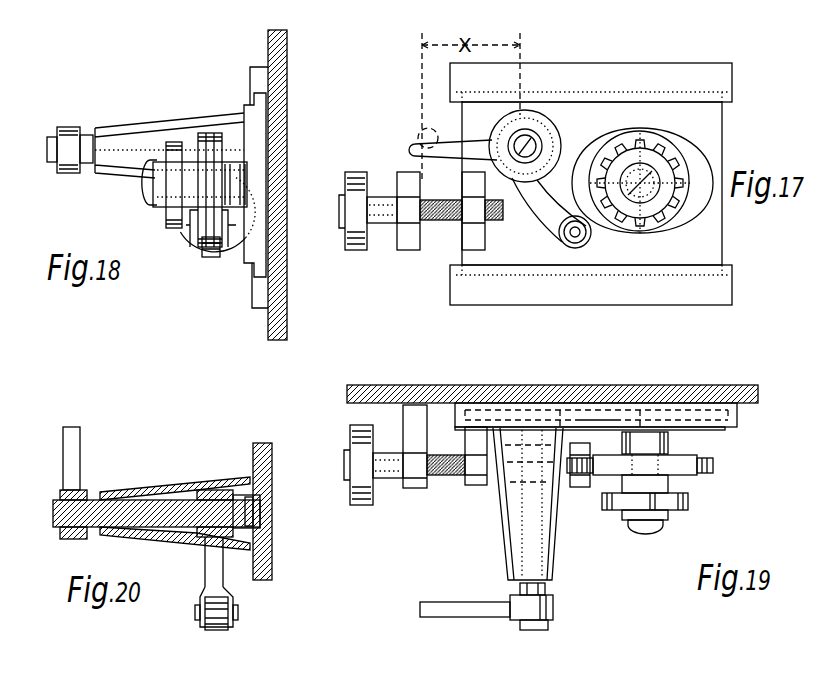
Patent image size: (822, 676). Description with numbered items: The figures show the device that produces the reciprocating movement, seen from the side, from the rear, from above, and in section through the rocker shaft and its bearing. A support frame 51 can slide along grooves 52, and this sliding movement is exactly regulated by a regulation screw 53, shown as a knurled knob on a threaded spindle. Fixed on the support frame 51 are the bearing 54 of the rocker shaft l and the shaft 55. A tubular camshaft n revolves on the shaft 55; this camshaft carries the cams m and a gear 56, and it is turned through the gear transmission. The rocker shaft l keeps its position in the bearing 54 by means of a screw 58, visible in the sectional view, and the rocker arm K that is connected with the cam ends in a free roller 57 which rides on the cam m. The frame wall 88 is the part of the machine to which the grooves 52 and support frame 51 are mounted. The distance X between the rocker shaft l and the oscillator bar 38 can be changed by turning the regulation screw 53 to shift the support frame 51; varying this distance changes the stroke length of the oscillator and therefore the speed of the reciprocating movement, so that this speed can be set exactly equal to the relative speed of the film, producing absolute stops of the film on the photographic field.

In FIG. 17, the oscillator bar 38 is at (414, 131).
In FIG. 18, the support frame 51 is at (258, 124).
In FIG. 17, the support frame 51 is at (592, 183).
In FIG. 19, the support frame 51 is at (604, 438).
In FIG. 20, the support frame 51 is at (258, 500).
In FIG. 18, the grooves 52 is at (252, 82).
In FIG. 17, the grooves 52 is at (591, 184).
In FIG. 19, the grooves 52 is at (740, 410).
In FIG. 18, the regulation screw 53 is at (192, 243).
In FIG. 17, the regulation screw 53 is at (421, 227).
In FIG. 19, the regulation screw 53 is at (415, 470).
In FIG. 18, the bearing 54 is at (226, 112).
In FIG. 17, the bearing 54 is at (485, 145).
In FIG. 19, the bearing 54 is at (504, 541).
In FIG. 20, the bearing 54 is at (175, 505).
In FIG. 18, the shaft 55 is at (149, 188).
In FIG. 17, the shaft 55 is at (625, 144).
In FIG. 19, the shaft 55 is at (644, 526).
In FIG. 18, the gear 56 is at (167, 238).
In FIG. 17, the gear 56 is at (668, 160).
In FIG. 19, the gear 56 is at (660, 495).
In FIG. 18, the free roller 57 is at (211, 258).
In FIG. 17, the free roller 57 is at (554, 238).
In FIG. 20, the free roller 57 is at (216, 627).
In FIG. 20, the screw 58 is at (265, 510).
In FIG. 18, the frame wall 88 is at (284, 135).
In FIG. 19, the frame wall 88 is at (449, 378).
In FIG. 18, the lever arm K is at (75, 136).
In FIG. 17, the lever arm K is at (526, 194).
In FIG. 19, the lever arm K is at (465, 598).
In FIG. 20, the lever arm K is at (146, 527).
In FIG. 18, the rocker shaft l is at (42, 149).
In FIG. 19, the rocker shaft l is at (531, 632).
In FIG. 20, the rocker shaft l is at (145, 514).
In FIG. 18, the cams m is at (207, 179).
In FIG. 17, the cams m is at (640, 180).
In FIG. 19, the cams m is at (654, 465).
In FIG. 18, the tubular camshaft n is at (163, 205).
In FIG. 17, the tubular camshaft n is at (642, 228).
In FIG. 19, the tubular camshaft n is at (667, 447).